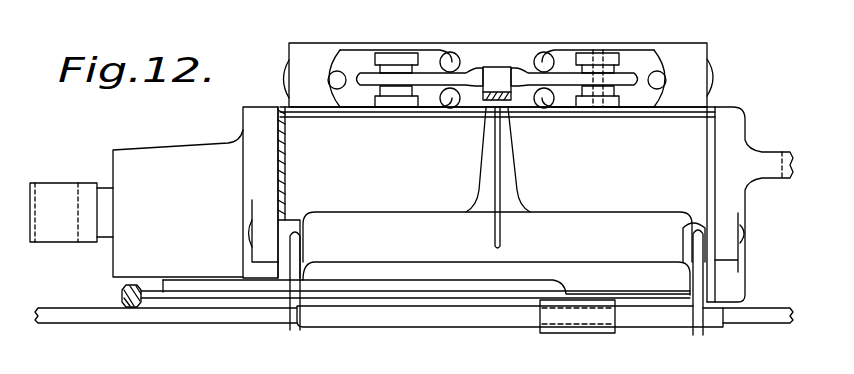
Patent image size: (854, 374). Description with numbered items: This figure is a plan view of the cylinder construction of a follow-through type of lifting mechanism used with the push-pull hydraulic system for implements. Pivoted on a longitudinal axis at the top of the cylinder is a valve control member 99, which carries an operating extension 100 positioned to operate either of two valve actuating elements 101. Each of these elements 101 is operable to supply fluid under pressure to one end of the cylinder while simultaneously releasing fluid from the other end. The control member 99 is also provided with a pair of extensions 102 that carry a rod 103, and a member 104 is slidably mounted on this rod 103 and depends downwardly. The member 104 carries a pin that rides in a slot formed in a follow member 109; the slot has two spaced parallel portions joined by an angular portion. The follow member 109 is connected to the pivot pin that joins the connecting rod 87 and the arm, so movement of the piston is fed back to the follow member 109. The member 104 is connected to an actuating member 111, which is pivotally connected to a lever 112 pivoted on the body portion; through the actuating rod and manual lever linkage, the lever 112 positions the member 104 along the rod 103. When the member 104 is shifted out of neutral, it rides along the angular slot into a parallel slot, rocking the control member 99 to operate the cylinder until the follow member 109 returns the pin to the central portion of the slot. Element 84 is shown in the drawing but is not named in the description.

The clamping flange 84 is at (243, 125).
The connecting rod 87 is at (100, 186).
The valve control member 99 is at (600, 222).
The operating extension 100 is at (514, 168).
The valve actuating elements 101 is at (478, 68).
The extensions 102 is at (294, 330).
The rod 103 is at (512, 320).
The member 104 is at (585, 333).
The follow member 109 is at (196, 320).
The actuating member 111 is at (430, 292).
The lever 112 is at (121, 293).